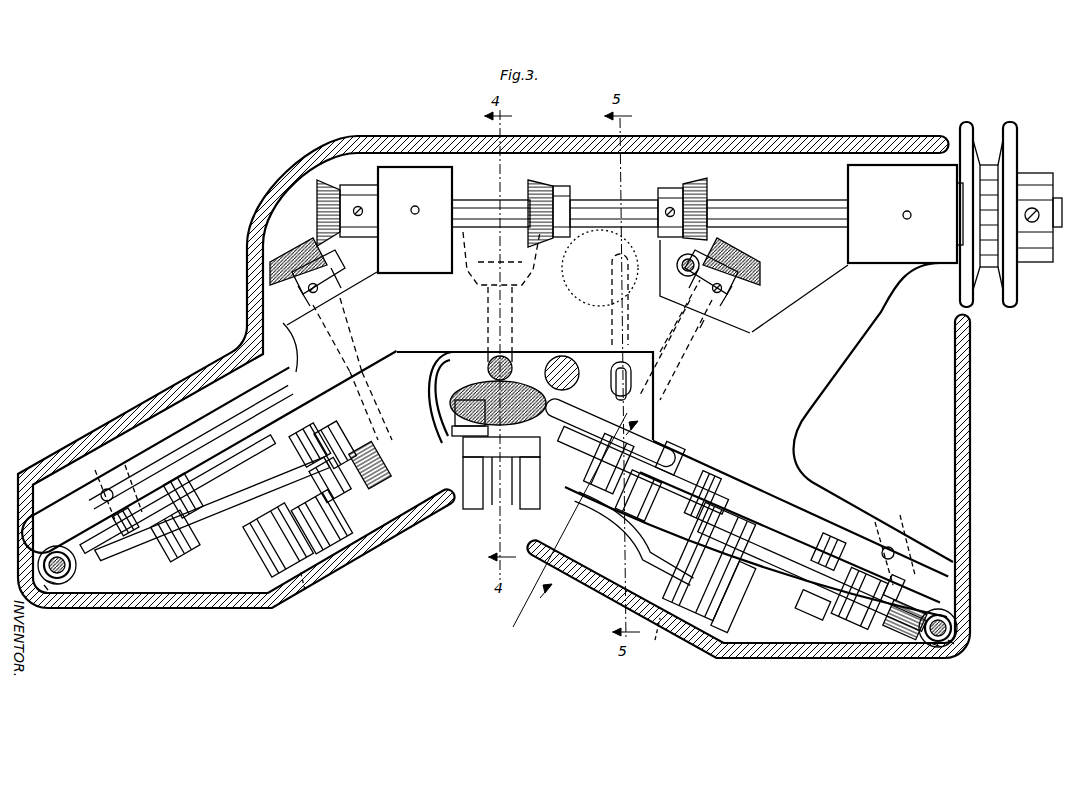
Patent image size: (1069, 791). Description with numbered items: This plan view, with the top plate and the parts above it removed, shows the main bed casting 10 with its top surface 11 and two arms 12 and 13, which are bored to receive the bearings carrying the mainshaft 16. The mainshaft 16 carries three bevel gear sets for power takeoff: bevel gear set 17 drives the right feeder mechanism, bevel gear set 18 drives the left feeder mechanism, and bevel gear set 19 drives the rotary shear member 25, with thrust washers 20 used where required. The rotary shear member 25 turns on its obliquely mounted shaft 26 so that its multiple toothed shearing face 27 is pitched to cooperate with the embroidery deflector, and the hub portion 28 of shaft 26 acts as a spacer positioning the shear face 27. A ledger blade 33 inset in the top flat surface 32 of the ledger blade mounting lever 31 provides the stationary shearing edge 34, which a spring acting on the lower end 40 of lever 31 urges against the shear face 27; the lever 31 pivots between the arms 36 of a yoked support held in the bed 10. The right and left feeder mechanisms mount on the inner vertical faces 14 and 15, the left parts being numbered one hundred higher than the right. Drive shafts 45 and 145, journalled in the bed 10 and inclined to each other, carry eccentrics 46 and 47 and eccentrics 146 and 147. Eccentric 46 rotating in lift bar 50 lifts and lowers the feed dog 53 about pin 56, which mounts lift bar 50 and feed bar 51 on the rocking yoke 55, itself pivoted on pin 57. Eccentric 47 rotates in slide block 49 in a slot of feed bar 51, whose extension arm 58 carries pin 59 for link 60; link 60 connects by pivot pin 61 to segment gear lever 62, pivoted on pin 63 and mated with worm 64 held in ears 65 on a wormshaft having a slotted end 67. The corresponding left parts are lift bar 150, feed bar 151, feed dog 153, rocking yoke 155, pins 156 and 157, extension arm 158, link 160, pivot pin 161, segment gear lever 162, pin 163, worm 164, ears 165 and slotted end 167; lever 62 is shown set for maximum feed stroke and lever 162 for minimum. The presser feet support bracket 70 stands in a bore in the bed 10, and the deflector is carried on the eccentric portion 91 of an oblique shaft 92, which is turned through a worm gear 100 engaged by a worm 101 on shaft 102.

The main bed casting 10 is at (818, 390).
The top surface 11 is at (568, 360).
The arm 12 is at (855, 178).
The arm 13 is at (450, 177).
The inner vertical face 14 is at (759, 529).
The inner vertical face 15 is at (208, 462).
The mainshaft 16 is at (784, 206).
The bevel gear set 17 is at (704, 192).
The bevel gear set 18 is at (320, 222).
The bevel gear set 19 is at (506, 226).
The thrust washers 20 is at (343, 287).
The rotary shear member 25 is at (550, 402).
The shaft 26 is at (514, 310).
The multiple toothed shearing face 27 is at (498, 403).
The hub portion 28 is at (518, 352).
The ledger blade mounting lever 31 is at (490, 460).
The top flat surface 32 is at (465, 438).
The ledger blade 33 is at (470, 413).
The stationary shearing edge 34 is at (442, 362).
The arms 36 is at (470, 510).
The lower end 40 is at (500, 510).
The drive shaft 45 is at (700, 328).
The eccentric 46 is at (614, 520).
The eccentric 47 is at (626, 482).
The slide block 49 is at (645, 452).
The lift bar 50 is at (635, 545).
The feed bar 51 is at (700, 492).
The feed dog 53 is at (585, 515).
The rocking yoke 55 is at (700, 603).
The pin 56 is at (648, 638).
The pin 57 is at (700, 615).
The extension arm 58 is at (744, 575).
The pin 59 is at (812, 612).
The link 60 is at (852, 595).
The pivot pin 61 is at (830, 545).
The segment gear lever 62 is at (906, 606).
The pin 63 is at (893, 584).
The worm 64 is at (933, 640).
The ears 65 is at (958, 618).
The slotted end 67 is at (950, 640).
The presser feet support bracket 70 is at (579, 370).
The eccentric portion 91 is at (616, 396).
The shaft 92 is at (612, 314).
The worm gear 100 is at (599, 268).
The worm 101 is at (676, 266).
The shaft 102 is at (690, 282).
The drive shaft 145 is at (352, 318).
The eccentric 146 is at (372, 470).
The eccentric 147 is at (338, 448).
The lift bar 150 is at (348, 486).
The feed bar 151 is at (312, 446).
The feed dog 153 is at (472, 356).
The rocking yoke 155 is at (262, 552).
The pin 156 is at (299, 593).
The pin 157 is at (338, 550).
The extension arm 158 is at (236, 525).
The link 160 is at (178, 538).
The pivot pin 161 is at (178, 484).
The segment gear lever 162 is at (76, 567).
The pin 163 is at (126, 504).
The worm 164 is at (66, 582).
The ears 165 is at (55, 548).
The slotted end 167 is at (56, 585).